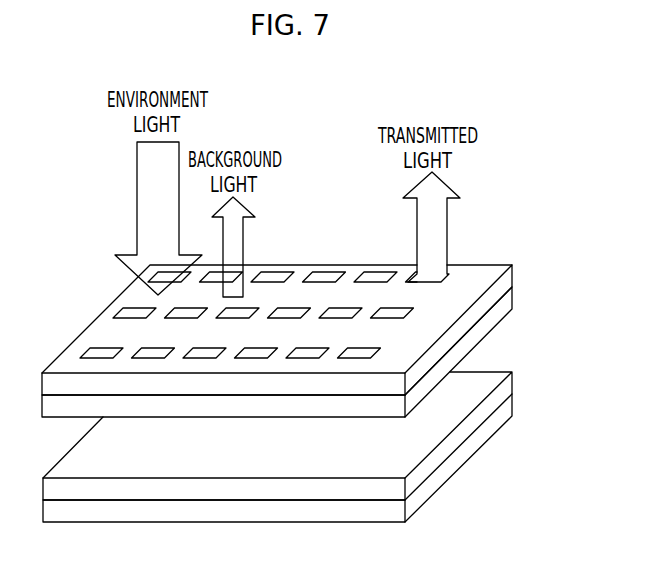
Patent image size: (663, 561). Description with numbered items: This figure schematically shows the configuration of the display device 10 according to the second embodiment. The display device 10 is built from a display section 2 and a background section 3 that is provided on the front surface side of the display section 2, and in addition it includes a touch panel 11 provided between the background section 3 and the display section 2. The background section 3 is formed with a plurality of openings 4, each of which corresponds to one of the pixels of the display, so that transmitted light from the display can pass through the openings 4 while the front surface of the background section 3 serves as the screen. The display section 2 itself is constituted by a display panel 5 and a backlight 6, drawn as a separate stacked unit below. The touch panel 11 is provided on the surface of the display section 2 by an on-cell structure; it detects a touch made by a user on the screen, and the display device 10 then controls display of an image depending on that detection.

The display device 10 is at (518, 133).
The display section 2 is at (35, 478).
The background section 3 is at (513, 276).
The touch panel 11 is at (513, 297).
The openings 4 is at (247, 310).
The display panel 5 is at (513, 383).
The backlight 6 is at (513, 404).